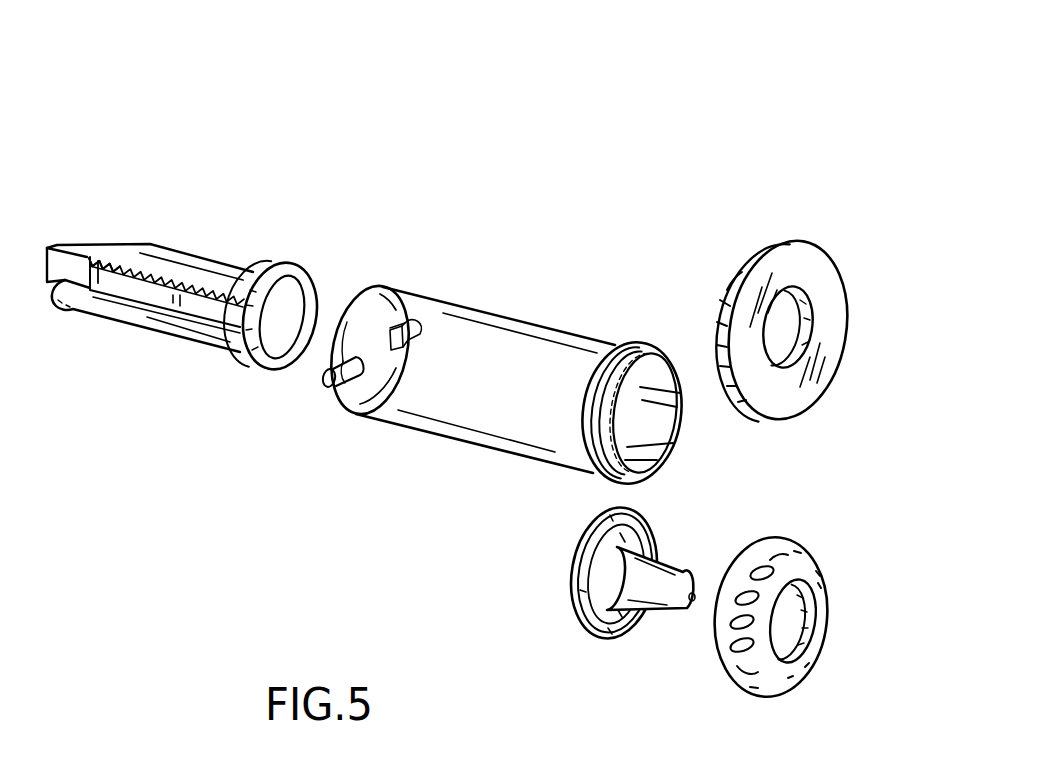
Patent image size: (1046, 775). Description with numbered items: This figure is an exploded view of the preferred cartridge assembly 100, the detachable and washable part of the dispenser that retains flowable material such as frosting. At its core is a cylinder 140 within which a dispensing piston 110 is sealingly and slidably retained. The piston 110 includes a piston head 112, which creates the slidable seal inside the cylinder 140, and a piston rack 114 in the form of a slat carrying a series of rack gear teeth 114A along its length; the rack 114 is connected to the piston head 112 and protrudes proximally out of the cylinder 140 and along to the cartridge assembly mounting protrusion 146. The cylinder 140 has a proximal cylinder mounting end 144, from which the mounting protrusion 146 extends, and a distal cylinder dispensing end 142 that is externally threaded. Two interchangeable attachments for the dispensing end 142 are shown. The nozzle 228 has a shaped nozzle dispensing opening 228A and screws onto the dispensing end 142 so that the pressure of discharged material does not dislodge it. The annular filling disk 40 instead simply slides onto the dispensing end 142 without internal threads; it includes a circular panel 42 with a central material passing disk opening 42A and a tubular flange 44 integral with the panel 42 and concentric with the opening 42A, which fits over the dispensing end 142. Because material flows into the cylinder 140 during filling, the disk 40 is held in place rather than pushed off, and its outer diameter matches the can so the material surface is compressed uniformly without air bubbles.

The cartridge assembly 100 is at (616, 101).
The annular filling disk 40 is at (824, 90).
The dispensing piston 110 is at (238, 264).
The piston head 112 is at (310, 270).
The piston rack 114 is at (157, 268).
The rack gear teeth 114A is at (113, 262).
The cartridge assembly mounting protrusion 146 is at (162, 324).
The cylinder 140 is at (503, 337).
The cylinder dispensing end 142 is at (617, 348).
The cylinder mounting end 144 is at (417, 298).
The circular panel 42 is at (792, 272).
The material passing disk opening 42A is at (781, 333).
The tubular flange 44 is at (722, 290).
The nozzle 228 is at (522, 563).
The nozzle dispensing opening 228A is at (697, 600).